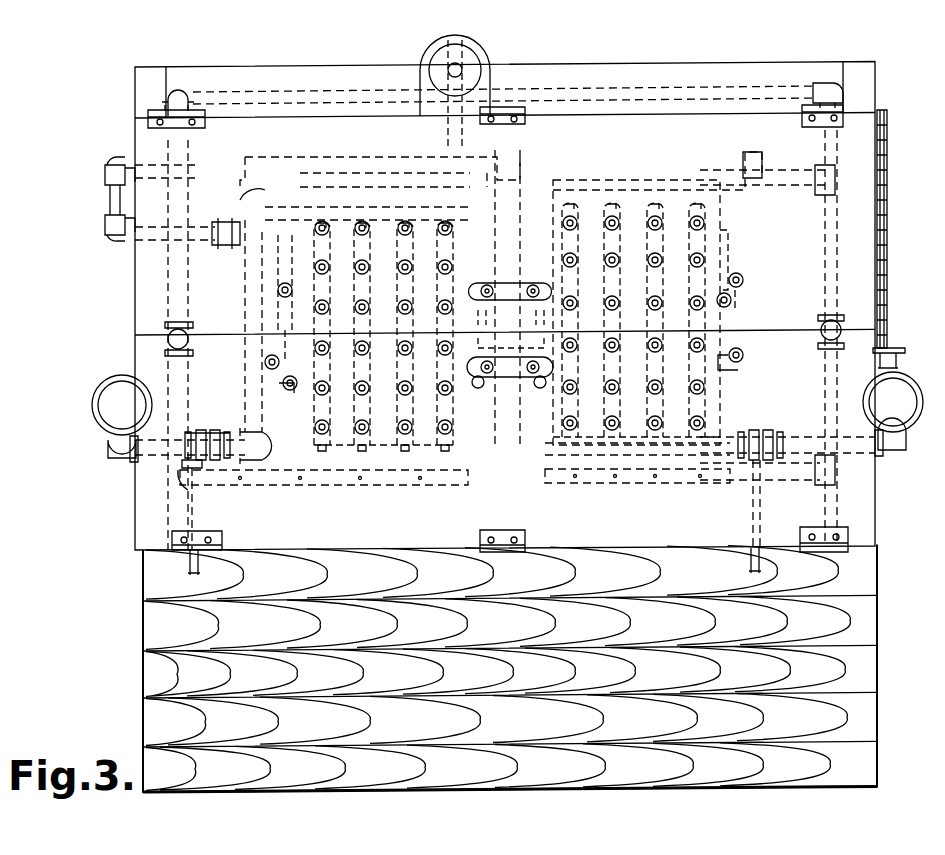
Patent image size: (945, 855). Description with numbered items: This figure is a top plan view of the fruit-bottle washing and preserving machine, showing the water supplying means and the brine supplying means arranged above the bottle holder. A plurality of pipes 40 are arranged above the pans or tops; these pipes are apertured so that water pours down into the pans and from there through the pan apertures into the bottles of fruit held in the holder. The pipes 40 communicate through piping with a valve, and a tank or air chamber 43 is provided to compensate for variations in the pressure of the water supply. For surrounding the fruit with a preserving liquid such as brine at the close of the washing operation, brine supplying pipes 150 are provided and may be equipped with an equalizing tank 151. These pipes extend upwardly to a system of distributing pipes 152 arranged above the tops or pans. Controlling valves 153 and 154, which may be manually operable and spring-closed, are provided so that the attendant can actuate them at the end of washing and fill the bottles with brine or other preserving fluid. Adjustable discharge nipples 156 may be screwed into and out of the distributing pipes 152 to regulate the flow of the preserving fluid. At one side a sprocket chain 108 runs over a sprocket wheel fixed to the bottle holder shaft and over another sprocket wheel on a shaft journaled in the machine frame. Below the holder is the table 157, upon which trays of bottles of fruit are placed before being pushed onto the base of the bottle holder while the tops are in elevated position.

The tank or air chamber 43 is at (468, 58).
The sprocket chain 108 is at (884, 195).
The brine supplying pipes 150 is at (792, 438).
The equalizing tank 151 is at (905, 420).
The distributing pipes 152 is at (725, 400).
The controlling valve 153 is at (227, 557).
The controlling valve 154 is at (730, 560).
The adjustable discharge nipples 156 is at (447, 430).
The table 157 is at (862, 668).
The pipes 40 is at (581, 508).